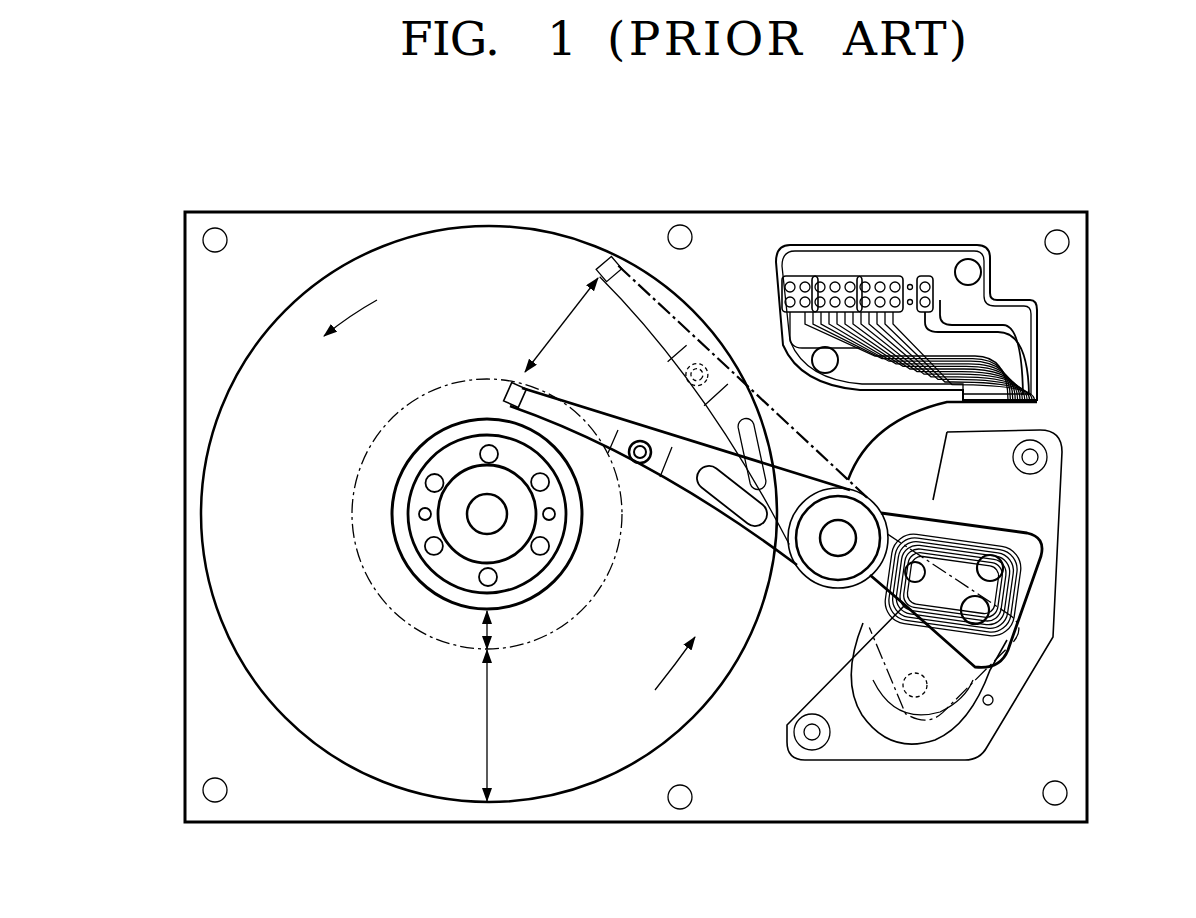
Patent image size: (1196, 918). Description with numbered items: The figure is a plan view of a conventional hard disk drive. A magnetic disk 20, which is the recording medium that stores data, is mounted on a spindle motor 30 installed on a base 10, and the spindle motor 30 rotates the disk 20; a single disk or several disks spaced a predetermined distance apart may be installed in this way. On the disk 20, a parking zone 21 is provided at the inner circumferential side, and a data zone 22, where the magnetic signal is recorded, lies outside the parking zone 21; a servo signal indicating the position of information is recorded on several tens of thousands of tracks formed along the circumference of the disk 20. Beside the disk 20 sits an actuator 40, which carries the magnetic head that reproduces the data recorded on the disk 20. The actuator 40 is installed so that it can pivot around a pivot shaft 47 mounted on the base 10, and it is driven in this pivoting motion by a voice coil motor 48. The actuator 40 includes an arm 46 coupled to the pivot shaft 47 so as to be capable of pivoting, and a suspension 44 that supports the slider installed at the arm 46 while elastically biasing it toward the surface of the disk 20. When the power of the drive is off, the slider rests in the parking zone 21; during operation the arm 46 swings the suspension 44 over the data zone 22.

The base 10 is at (303, 228).
The magnetic disk 20 is at (540, 250).
The parking zone 21 is at (487, 630).
The data zone 22 is at (487, 705).
The spindle motor 30 is at (455, 500).
The actuator 40 is at (795, 622).
The suspension 44 is at (575, 413).
The arm 46 is at (700, 500).
The pivot shaft 47 is at (832, 537).
The voice coil motor 48 is at (958, 718).